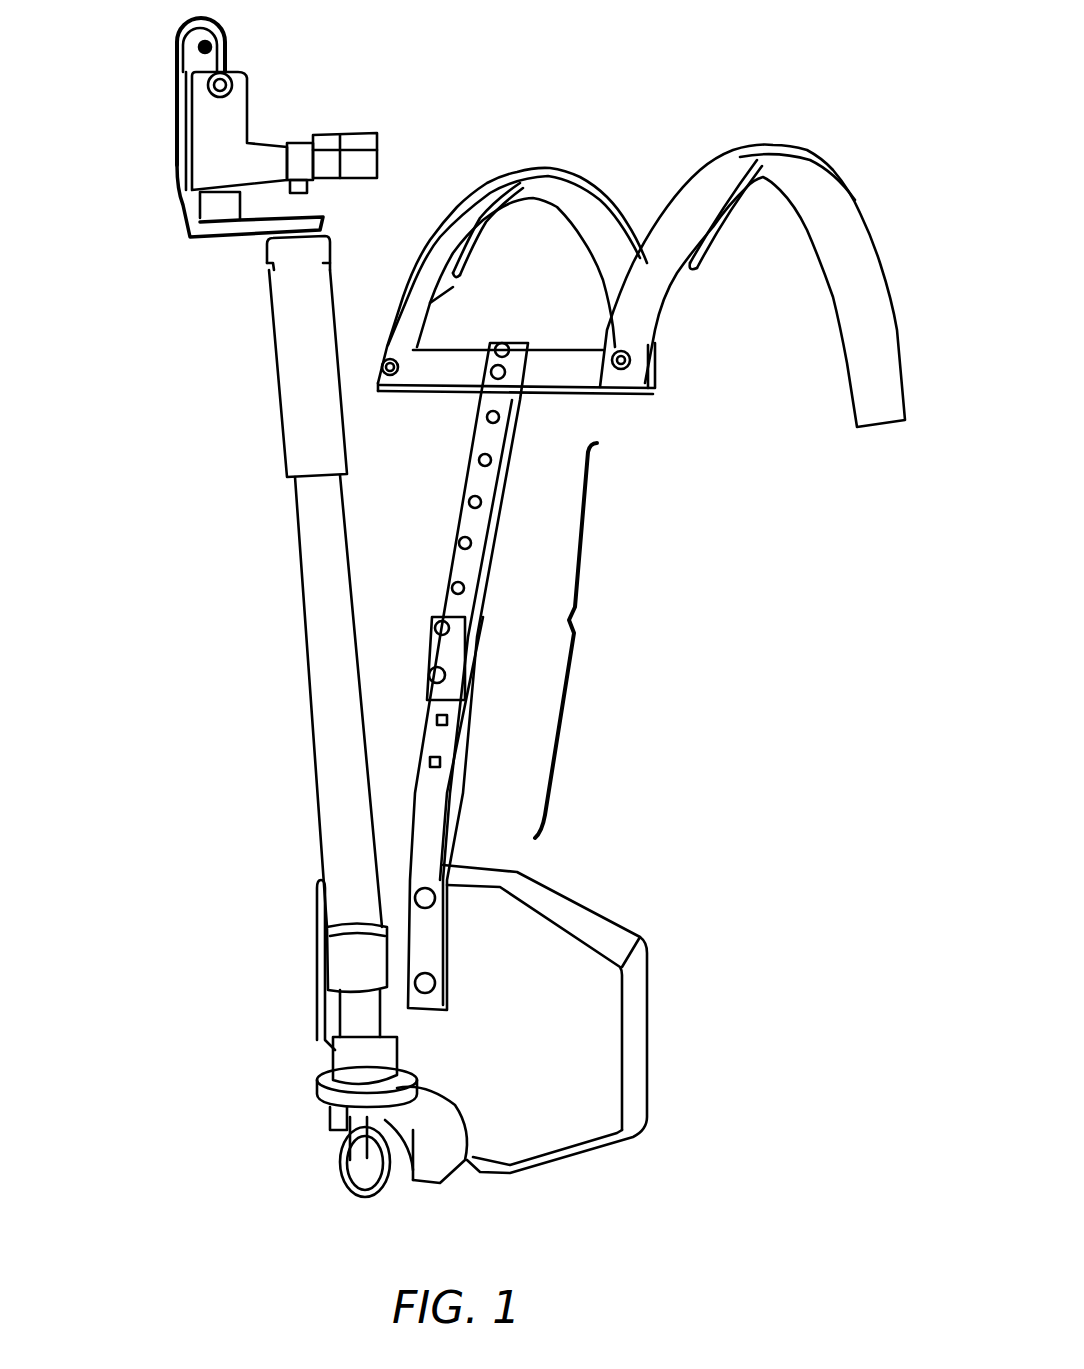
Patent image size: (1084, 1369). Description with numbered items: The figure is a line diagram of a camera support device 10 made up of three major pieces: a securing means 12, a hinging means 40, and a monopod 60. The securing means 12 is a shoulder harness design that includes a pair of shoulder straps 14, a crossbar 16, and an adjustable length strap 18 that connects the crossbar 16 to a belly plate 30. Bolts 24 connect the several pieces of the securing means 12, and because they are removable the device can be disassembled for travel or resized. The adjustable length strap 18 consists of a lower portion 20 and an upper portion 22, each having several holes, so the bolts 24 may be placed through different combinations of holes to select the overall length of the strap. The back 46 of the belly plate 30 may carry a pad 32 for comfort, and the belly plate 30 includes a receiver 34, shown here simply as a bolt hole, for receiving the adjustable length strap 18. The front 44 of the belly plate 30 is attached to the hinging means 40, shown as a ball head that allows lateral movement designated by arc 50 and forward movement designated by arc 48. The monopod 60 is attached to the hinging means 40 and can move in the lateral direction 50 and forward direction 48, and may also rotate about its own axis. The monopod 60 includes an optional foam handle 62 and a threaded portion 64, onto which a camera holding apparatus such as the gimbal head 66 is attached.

The camera support device 10 is at (691, 88).
The securing means 12 is at (703, 639).
The shoulder straps 14 is at (545, 180).
The crossbar 16 is at (568, 380).
The adjustable length strap 18 is at (573, 640).
The lower portion 20 is at (455, 760).
The upper portion 22 is at (487, 525).
The bolts 24 is at (405, 358).
The belly plate 30 is at (592, 1115).
The pad 32 is at (626, 946).
The receiver 34 is at (418, 938).
The hinging means 40 is at (400, 1186).
The front 44 is at (505, 1130).
The back 46 is at (660, 1028).
The arc 48 is at (298, 703).
The arc 50 is at (311, 866).
The monopod 60 is at (295, 536).
The foam handle 62 is at (283, 378).
The threaded portion 64 is at (270, 262).
The gimbal head 66 is at (180, 100).